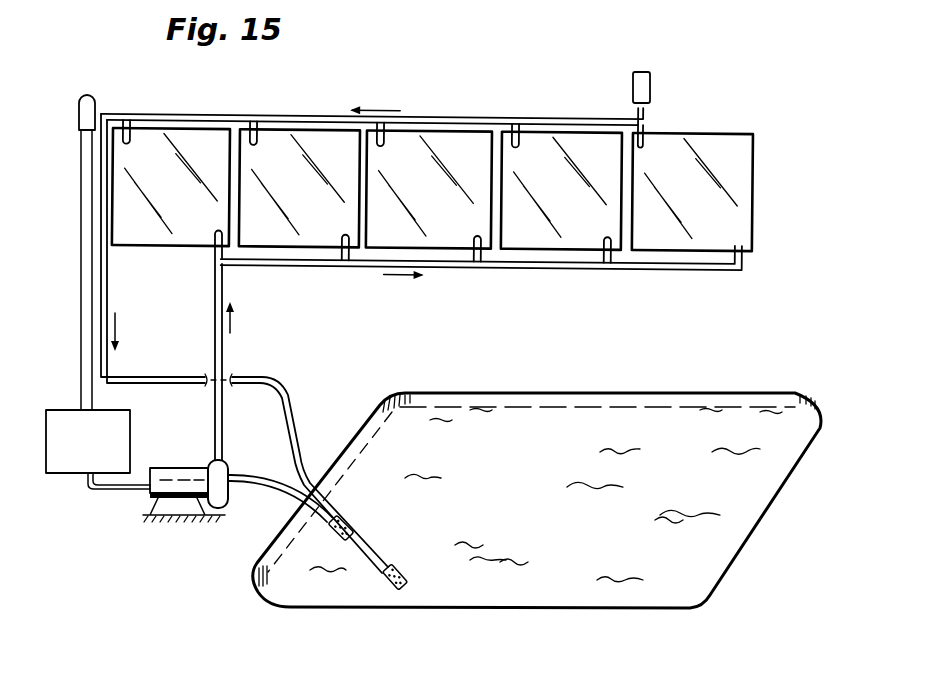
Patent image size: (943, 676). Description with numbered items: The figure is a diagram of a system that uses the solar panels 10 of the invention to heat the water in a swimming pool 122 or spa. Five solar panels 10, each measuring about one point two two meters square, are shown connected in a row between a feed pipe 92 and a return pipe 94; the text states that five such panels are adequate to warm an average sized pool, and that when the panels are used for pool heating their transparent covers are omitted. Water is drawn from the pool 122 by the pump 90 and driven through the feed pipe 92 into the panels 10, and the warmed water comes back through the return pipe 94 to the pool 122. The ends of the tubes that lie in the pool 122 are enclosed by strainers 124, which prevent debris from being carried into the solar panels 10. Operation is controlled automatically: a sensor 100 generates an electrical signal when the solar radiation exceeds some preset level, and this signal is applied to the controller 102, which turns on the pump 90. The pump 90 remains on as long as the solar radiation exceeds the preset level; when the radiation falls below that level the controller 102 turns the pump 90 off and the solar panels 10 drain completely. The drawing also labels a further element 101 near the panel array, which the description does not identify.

The solar panel 10 is at (699, 206).
The pump 90 is at (172, 468).
The feed pipe 92 is at (223, 432).
The return pipe 94 is at (109, 293).
The sensor 100 is at (78, 116).
The collector outlet sensor 101 is at (651, 86).
The controller 102 is at (62, 415).
The swimming pool 122 is at (536, 531).
The strainer 124 is at (390, 582).